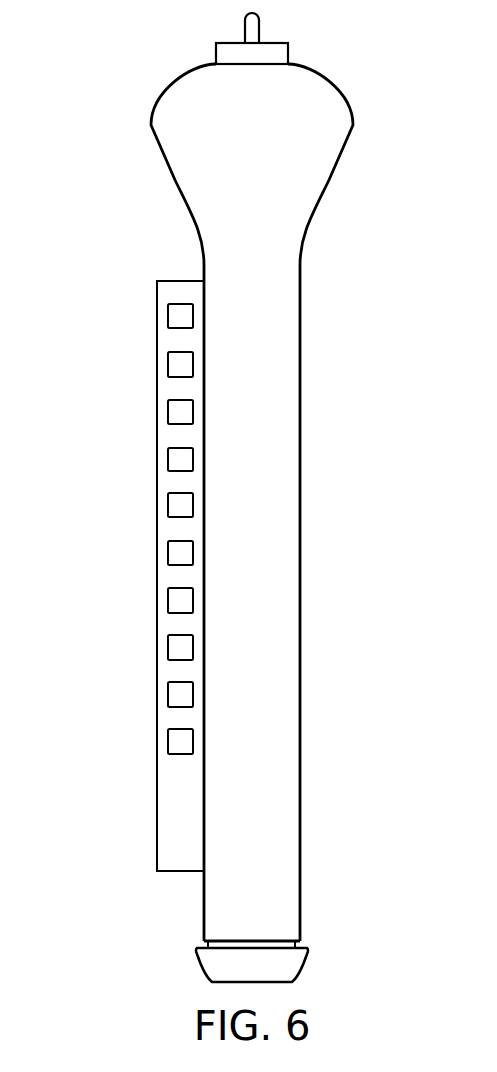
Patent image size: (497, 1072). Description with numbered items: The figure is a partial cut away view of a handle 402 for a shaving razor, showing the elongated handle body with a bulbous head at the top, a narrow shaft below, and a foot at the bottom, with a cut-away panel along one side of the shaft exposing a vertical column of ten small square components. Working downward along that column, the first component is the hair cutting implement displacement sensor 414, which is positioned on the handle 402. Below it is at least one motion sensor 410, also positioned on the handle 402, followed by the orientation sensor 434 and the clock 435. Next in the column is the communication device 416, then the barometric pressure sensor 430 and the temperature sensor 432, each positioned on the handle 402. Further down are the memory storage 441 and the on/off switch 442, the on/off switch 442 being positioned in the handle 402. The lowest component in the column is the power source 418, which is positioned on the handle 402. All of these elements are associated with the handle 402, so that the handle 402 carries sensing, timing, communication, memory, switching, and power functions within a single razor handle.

The handle 402 is at (305, 369).
The hair cutting implement displacement sensor 414 is at (168, 316).
The motion sensor 410 is at (168, 364).
The orientation sensor 434 is at (168, 412).
The clock 435 is at (168, 460).
The communication device 416 is at (168, 505).
The barometric pressure sensor 430 is at (168, 553).
The temperature sensor 432 is at (168, 600).
The memory storage 441 is at (168, 647).
The on/off switch 442 is at (168, 694).
The power source 418 is at (168, 741).